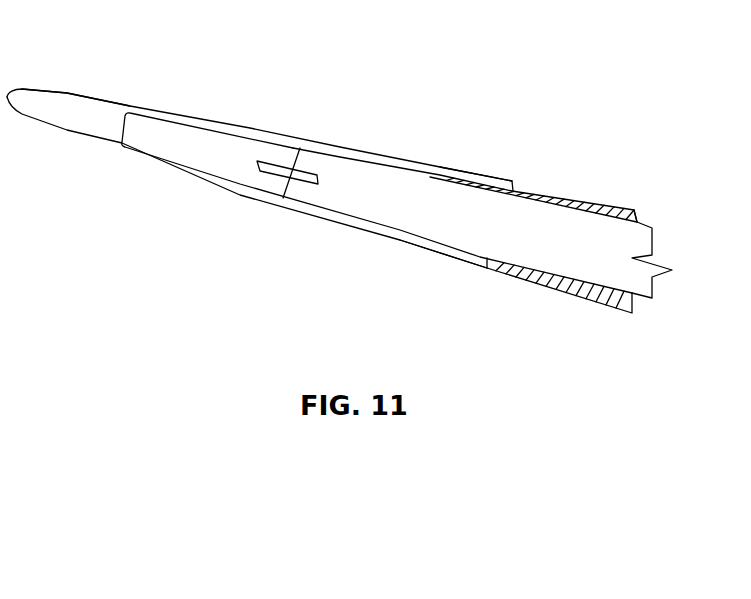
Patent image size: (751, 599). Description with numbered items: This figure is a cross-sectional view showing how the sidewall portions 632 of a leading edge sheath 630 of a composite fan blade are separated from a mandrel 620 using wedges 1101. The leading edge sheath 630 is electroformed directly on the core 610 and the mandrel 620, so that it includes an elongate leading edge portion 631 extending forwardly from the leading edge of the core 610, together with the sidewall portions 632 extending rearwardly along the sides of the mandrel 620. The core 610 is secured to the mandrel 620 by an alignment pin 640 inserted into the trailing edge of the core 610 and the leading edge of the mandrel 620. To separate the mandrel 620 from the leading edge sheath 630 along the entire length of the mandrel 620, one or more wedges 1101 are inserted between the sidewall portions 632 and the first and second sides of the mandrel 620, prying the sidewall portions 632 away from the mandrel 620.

The leading edge sheath 630 is at (49, 102).
The elongate leading edge portion 631 is at (68, 113).
The core 610 is at (188, 134).
The mandrel 620 is at (340, 197).
The alignment pin 640 is at (282, 170).
The sidewall portions 632 is at (500, 180).
The wedges 1101 is at (613, 210).